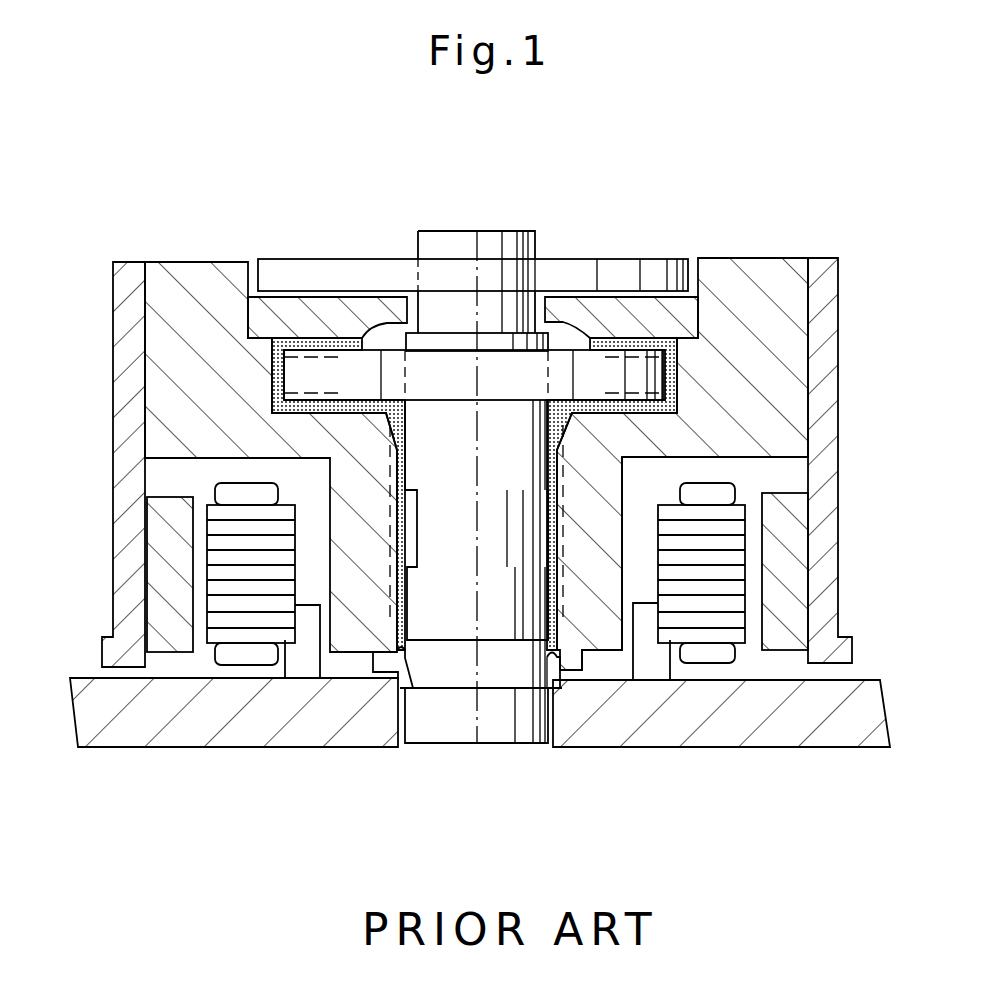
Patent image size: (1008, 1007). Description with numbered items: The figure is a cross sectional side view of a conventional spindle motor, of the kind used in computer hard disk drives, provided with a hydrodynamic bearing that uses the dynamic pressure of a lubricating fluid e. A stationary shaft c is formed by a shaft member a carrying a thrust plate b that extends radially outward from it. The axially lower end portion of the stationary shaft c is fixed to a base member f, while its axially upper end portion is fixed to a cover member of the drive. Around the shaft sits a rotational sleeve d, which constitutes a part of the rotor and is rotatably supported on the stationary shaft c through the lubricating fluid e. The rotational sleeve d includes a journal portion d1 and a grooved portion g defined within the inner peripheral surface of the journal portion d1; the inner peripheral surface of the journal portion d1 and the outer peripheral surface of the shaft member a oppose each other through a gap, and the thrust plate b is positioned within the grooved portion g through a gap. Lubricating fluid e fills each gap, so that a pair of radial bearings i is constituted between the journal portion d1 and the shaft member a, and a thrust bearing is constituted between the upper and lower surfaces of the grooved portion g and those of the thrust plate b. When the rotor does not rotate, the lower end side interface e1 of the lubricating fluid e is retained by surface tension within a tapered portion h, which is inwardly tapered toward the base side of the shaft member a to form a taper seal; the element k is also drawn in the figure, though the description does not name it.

The shaft member a is at (478, 613).
The thrust plate b is at (380, 375).
The stationary shaft c is at (493, 231).
The rotational sleeve d is at (757, 258).
The journal portion d1 is at (603, 497).
The lubricating fluid e is at (632, 335).
The lower end side interface e1 is at (553, 705).
The base member f is at (747, 713).
The grooved portion g is at (672, 367).
The tapered portion h is at (400, 683).
The radial bearings i is at (566, 441).
The lubricant cup k is at (303, 408).